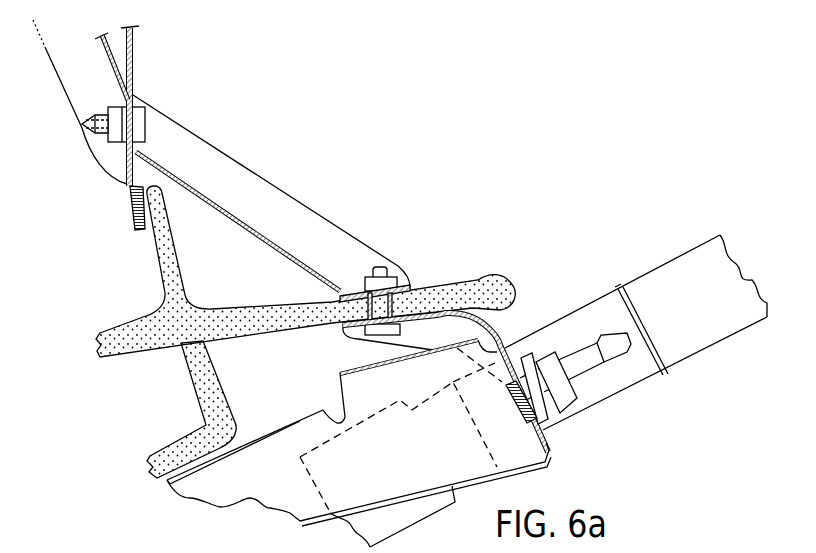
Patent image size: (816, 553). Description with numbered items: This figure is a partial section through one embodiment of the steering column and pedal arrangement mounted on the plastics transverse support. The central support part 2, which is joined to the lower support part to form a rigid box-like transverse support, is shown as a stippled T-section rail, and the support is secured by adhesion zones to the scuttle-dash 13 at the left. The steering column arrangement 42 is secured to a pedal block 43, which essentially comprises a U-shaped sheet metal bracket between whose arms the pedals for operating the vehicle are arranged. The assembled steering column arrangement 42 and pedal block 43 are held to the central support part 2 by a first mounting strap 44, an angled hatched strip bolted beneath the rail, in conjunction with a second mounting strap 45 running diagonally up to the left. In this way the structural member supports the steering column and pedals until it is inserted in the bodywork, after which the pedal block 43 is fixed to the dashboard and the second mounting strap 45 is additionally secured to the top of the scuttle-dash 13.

The central support part 2 is at (500, 287).
The scuttle-dash 13 is at (136, 212).
The steering column arrangement 42 is at (691, 345).
The pedal block 43 is at (353, 383).
The first mounting strap 44 is at (502, 338).
The second mounting strap 45 is at (248, 187).